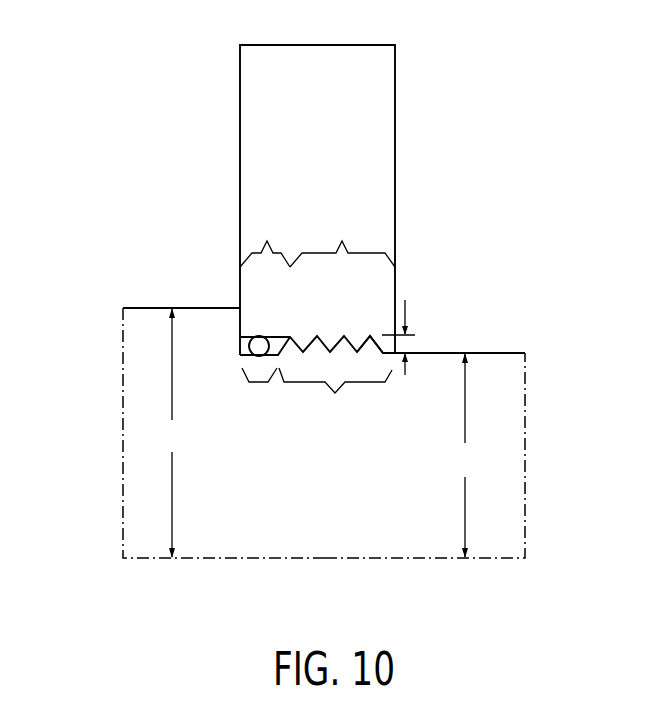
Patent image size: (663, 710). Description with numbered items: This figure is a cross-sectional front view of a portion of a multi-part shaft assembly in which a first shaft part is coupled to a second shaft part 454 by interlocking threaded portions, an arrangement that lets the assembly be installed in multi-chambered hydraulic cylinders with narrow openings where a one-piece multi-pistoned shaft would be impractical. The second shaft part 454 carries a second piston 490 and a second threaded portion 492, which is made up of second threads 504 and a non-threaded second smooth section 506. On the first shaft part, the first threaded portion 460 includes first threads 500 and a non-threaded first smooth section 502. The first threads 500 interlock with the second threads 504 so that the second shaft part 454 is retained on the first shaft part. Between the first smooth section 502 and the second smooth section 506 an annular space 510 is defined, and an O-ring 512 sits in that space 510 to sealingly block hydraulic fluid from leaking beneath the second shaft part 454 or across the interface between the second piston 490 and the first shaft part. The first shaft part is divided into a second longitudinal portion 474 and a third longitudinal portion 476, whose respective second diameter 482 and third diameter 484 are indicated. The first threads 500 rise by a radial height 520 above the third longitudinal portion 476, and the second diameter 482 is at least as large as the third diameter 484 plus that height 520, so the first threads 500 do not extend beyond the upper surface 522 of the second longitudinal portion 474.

The second shaft part 454 is at (457, 214).
The second piston 490 is at (395, 200).
The second smooth section 506 is at (265, 240).
The second threads 504 is at (342, 240).
The second threaded portion 492 is at (357, 351).
The first threaded portion 460 is at (369, 333).
The O-ring 512 is at (258, 346).
The space 510 is at (240, 354).
The first smooth section 502 is at (255, 383).
The first threads 500 is at (335, 396).
The height 520 is at (405, 376).
The upper surface 522 is at (212, 306).
The second diameter 482 is at (172, 433).
The third diameter 484 is at (466, 455).
The second longitudinal portion 474 is at (144, 566).
The third longitudinal portion 476 is at (502, 567).